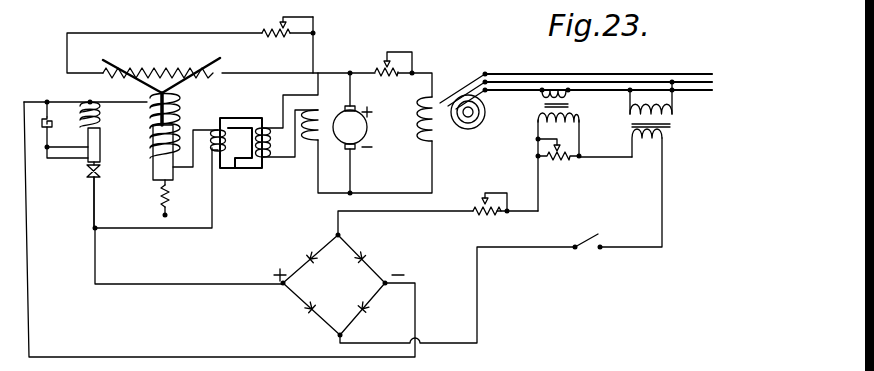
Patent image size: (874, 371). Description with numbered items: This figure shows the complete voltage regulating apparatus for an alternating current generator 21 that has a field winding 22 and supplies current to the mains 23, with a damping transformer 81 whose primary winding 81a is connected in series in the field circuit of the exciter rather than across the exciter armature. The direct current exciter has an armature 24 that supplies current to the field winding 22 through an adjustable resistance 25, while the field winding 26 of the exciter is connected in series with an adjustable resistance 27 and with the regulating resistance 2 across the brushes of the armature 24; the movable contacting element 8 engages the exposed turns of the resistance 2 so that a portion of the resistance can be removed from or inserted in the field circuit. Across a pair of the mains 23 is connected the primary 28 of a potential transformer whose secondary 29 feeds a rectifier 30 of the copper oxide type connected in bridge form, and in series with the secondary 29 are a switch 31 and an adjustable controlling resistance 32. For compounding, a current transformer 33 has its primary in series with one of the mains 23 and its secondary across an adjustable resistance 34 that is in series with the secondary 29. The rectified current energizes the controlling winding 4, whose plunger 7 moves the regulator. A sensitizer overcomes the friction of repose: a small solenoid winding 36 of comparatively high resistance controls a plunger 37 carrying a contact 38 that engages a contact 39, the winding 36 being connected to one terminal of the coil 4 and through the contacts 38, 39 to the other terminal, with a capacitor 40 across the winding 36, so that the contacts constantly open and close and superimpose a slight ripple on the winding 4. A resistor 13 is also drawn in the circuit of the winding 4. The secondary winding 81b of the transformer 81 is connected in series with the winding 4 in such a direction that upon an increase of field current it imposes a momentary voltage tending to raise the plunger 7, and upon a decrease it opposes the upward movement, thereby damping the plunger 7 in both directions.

The regulating resistance 2 is at (180, 66).
The controlling winding 4 is at (176, 112).
The plunger 7 is at (152, 165).
The movable contacting element 8 is at (136, 78).
The resistor 13 is at (170, 197).
The generator 21 is at (466, 130).
The field winding 22 is at (421, 140).
The mains 23 is at (661, 72).
The armature 24 is at (367, 128).
The adjustable resistance 25 is at (386, 66).
The field winding of the exciter 26 is at (331, 99).
The adjustable resistance 27 is at (287, 38).
The primary 28 is at (665, 107).
The secondary 29 is at (650, 152).
The rectifier 30 is at (339, 285).
The switch 31 is at (594, 240).
The adjustable controlling resistance 32 is at (497, 214).
The current transformer 33 is at (541, 110).
The adjustable resistance 34 is at (558, 160).
The winding 36 is at (100, 112).
The plunger 37 is at (100, 146).
The contact 38 is at (100, 171).
The contact 39 is at (96, 185).
The capacitor 40 is at (58, 127).
The transformer 81 is at (242, 118).
The primary winding 81a is at (268, 138).
The secondary winding 81b is at (221, 128).